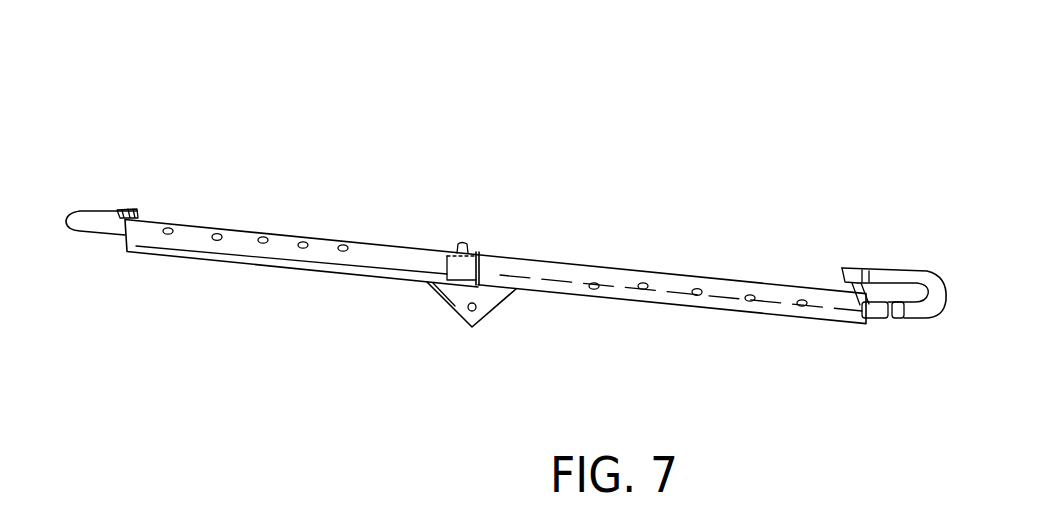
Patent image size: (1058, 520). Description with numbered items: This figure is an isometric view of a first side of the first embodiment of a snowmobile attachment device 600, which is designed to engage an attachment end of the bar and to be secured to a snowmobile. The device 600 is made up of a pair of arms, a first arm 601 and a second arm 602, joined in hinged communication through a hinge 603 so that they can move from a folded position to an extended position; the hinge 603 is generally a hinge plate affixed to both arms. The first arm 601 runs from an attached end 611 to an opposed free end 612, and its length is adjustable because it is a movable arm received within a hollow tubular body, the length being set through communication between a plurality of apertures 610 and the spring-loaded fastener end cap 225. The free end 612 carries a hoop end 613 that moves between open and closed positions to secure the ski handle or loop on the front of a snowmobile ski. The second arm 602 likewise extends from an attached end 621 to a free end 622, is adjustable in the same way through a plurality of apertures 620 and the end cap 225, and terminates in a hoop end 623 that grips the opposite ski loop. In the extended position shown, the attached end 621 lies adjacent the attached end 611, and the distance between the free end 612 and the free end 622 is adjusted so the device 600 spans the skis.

The snowmobile attachment device 600 is at (540, 109).
The first arm 601 is at (626, 265).
The second arm 602 is at (313, 173).
The hinge 603 is at (487, 301).
The apertures 610 is at (697, 290).
The attached end 611 is at (490, 252).
The free end 612 is at (840, 313).
The hoop end 613 is at (922, 280).
The apertures 620 is at (216, 240).
The attached end 621 is at (432, 260).
The free end 622 is at (137, 213).
The hoop end 623 is at (82, 225).
The end cap 225 is at (460, 244).